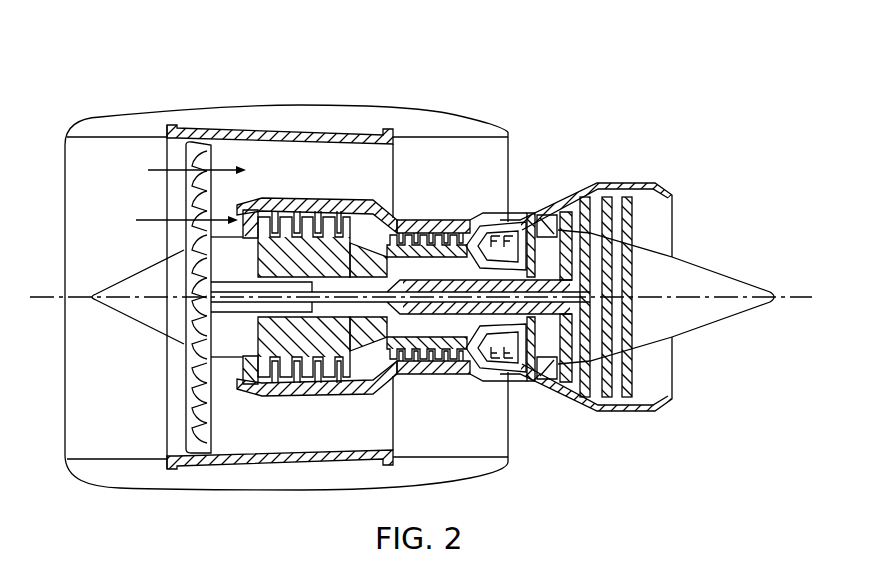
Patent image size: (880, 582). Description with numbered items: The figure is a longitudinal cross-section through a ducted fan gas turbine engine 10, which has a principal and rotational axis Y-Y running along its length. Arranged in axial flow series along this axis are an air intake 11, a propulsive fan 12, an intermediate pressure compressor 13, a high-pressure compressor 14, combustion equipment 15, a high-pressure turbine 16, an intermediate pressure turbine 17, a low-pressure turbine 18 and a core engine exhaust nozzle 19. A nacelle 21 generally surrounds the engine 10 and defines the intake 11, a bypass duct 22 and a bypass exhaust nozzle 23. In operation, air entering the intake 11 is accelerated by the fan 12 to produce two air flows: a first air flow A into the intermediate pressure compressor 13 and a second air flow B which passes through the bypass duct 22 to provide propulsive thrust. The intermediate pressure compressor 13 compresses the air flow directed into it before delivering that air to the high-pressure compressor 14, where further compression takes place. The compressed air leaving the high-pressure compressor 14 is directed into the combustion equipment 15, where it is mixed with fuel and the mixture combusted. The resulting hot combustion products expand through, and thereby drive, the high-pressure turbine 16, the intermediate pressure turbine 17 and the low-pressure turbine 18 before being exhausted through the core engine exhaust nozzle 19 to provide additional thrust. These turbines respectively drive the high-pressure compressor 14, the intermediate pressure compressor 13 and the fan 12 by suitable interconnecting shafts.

The ducted fan gas turbine engine 10 is at (106, 72).
The air intake 11 is at (112, 139).
The propulsive fan 12 is at (190, 416).
The intermediate pressure compressor 13 is at (320, 382).
The high-pressure compressor 14 is at (422, 235).
The combustion equipment 15 is at (472, 370).
The high-pressure turbine 16 is at (530, 378).
The intermediate pressure turbine 17 is at (562, 210).
The low-pressure turbine 18 is at (580, 398).
The core engine exhaust nozzle 19 is at (666, 199).
The nacelle 21 is at (324, 118).
The bypass duct 22 is at (467, 174).
The bypass exhaust nozzle 23 is at (510, 130).